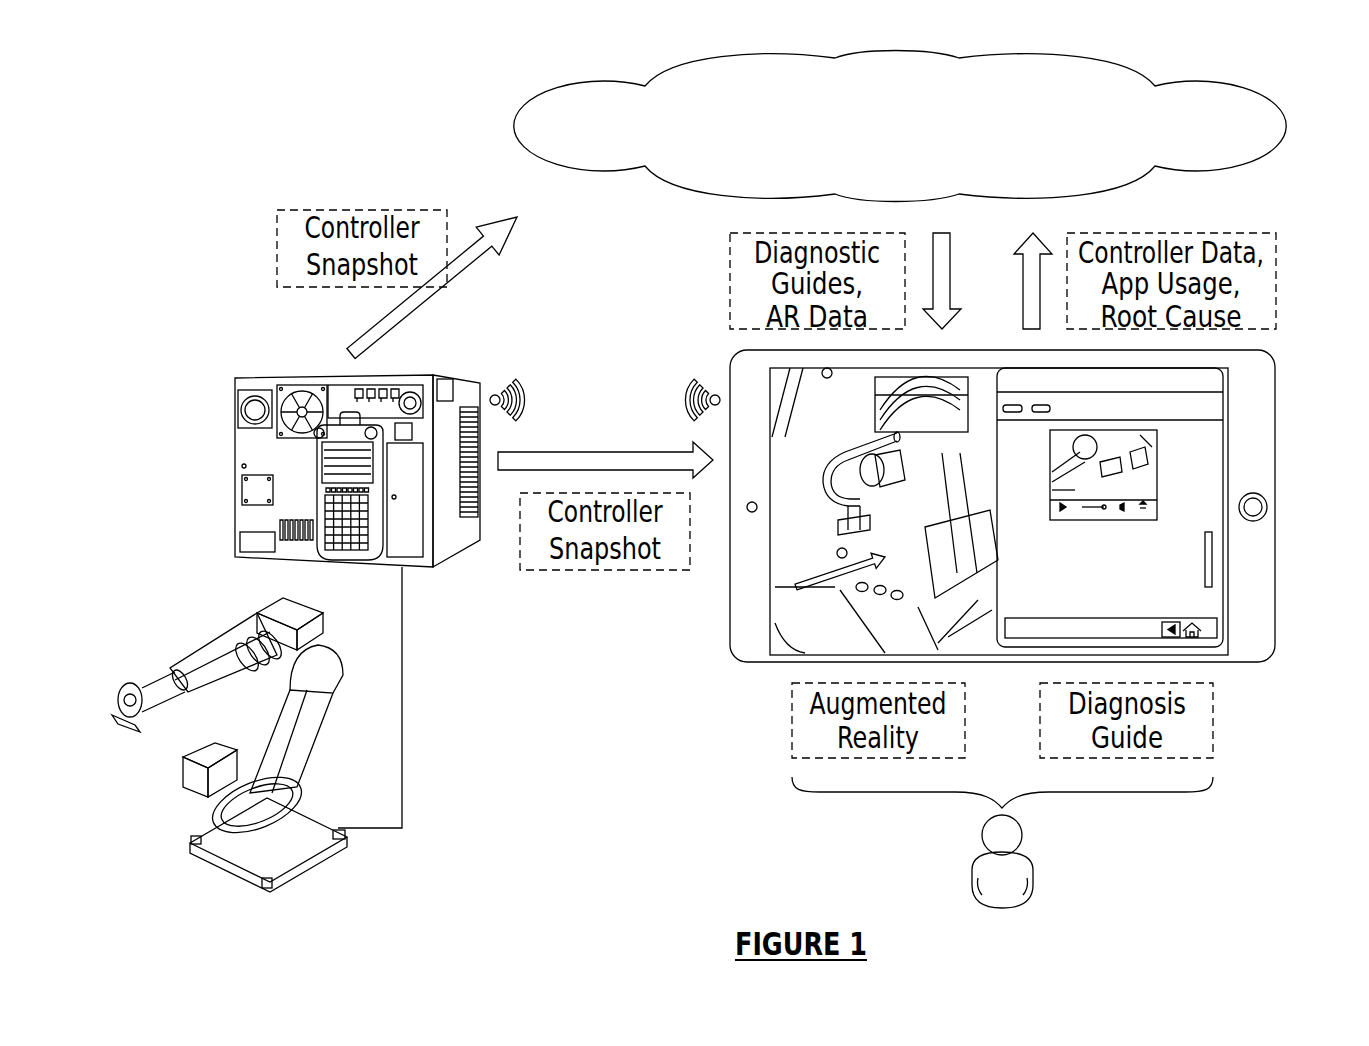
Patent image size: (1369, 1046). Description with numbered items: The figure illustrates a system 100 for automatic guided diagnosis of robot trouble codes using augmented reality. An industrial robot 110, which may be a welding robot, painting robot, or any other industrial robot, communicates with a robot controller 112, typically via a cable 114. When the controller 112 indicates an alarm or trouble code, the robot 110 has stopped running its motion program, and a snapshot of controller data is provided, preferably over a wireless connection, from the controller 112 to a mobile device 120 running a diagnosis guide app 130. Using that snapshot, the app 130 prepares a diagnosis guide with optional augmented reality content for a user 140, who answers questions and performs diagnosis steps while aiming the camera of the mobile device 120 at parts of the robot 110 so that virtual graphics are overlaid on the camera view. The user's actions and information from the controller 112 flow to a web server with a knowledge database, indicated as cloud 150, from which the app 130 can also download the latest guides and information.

The system 100 is at (283, 84).
The industrial robot 110 is at (293, 867).
The robot controller 112 is at (237, 462).
The cable 114 is at (402, 668).
The mobile device 120 is at (1273, 543).
The diagnosis guide app 130 is at (1180, 415).
The user 140 is at (1033, 873).
The cloud 150 is at (1212, 91).